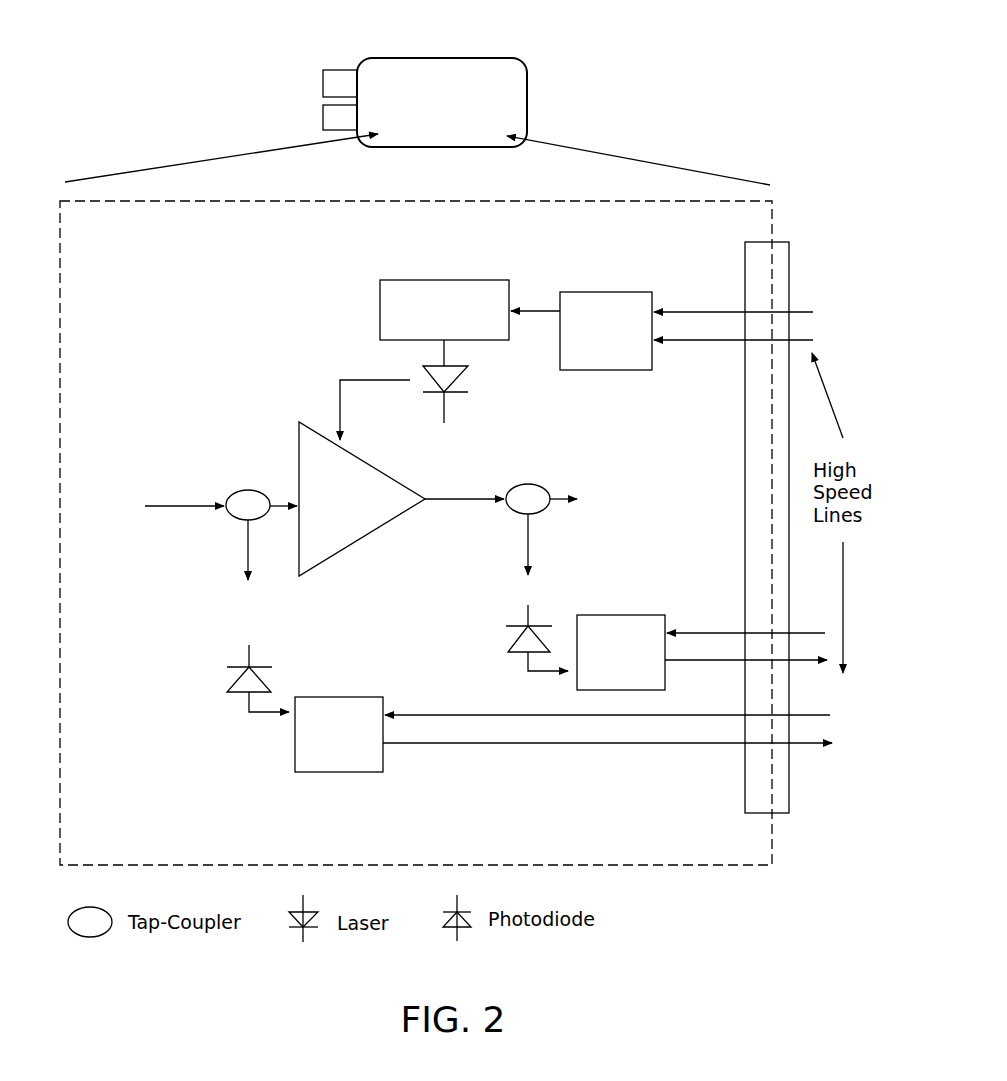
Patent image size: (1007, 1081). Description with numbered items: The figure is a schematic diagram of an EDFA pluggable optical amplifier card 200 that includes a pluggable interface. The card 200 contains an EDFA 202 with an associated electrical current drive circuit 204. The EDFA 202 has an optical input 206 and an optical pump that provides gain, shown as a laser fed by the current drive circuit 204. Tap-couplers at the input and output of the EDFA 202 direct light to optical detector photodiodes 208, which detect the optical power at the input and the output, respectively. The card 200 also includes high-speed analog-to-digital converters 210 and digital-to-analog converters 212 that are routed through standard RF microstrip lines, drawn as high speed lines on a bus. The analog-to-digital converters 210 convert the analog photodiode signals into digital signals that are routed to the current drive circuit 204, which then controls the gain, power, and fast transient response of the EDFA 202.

The EDFA pluggable optical amplifier card 200 is at (556, 41).
The EDFA 202 is at (370, 462).
The electrical current drive circuit 204 is at (444, 280).
The optical input 206 is at (172, 505).
The optical detector photodiode 208 is at (492, 635).
The high-speed analog-to-digital converter 210 is at (620, 615).
The digital-to-analog converter 212 is at (607, 292).